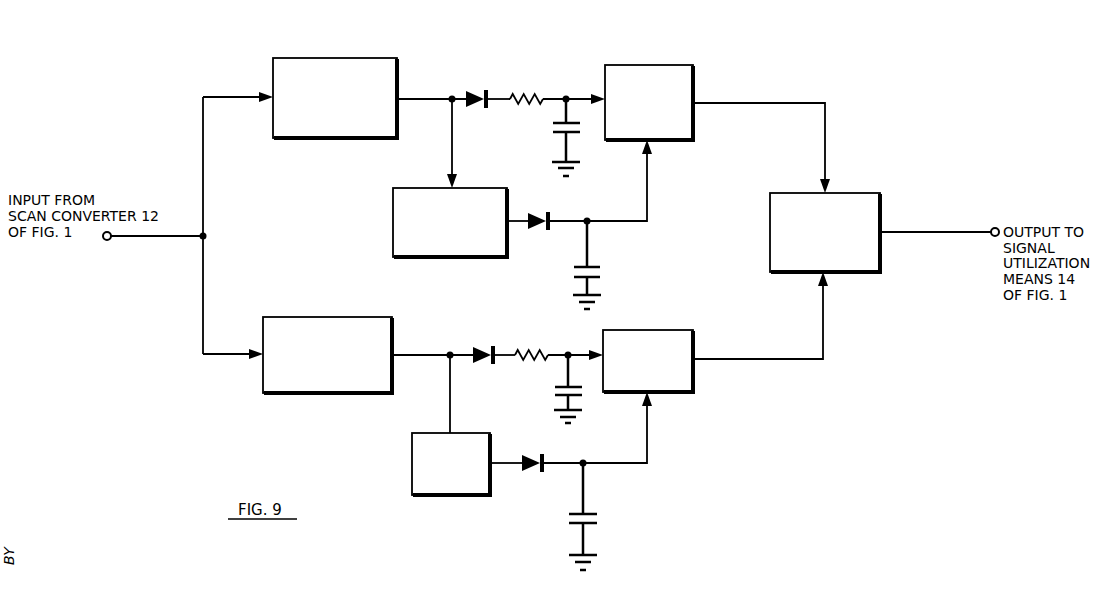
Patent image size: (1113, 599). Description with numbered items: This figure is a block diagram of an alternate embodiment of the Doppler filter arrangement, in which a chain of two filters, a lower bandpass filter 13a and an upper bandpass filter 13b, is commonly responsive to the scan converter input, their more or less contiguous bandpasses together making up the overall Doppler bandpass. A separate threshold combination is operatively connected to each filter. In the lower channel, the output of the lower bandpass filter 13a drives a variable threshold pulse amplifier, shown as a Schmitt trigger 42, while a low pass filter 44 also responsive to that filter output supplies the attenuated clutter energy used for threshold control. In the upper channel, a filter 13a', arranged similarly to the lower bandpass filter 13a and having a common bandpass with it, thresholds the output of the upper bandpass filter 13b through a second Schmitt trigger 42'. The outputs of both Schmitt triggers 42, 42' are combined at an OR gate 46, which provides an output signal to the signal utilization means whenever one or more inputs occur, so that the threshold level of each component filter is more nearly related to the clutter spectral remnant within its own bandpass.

The upper bandpass filter 13b is at (302, 110).
The lower bandpass filter 13a is at (328, 356).
The filter for thresholding the output of the upper bandpass filter 13a' is at (450, 223).
The Schmitt trigger 42 is at (648, 362).
The Schmitt trigger 42' is at (649, 103).
The low pass filter 44 is at (434, 474).
The OR gate 46 is at (860, 220).